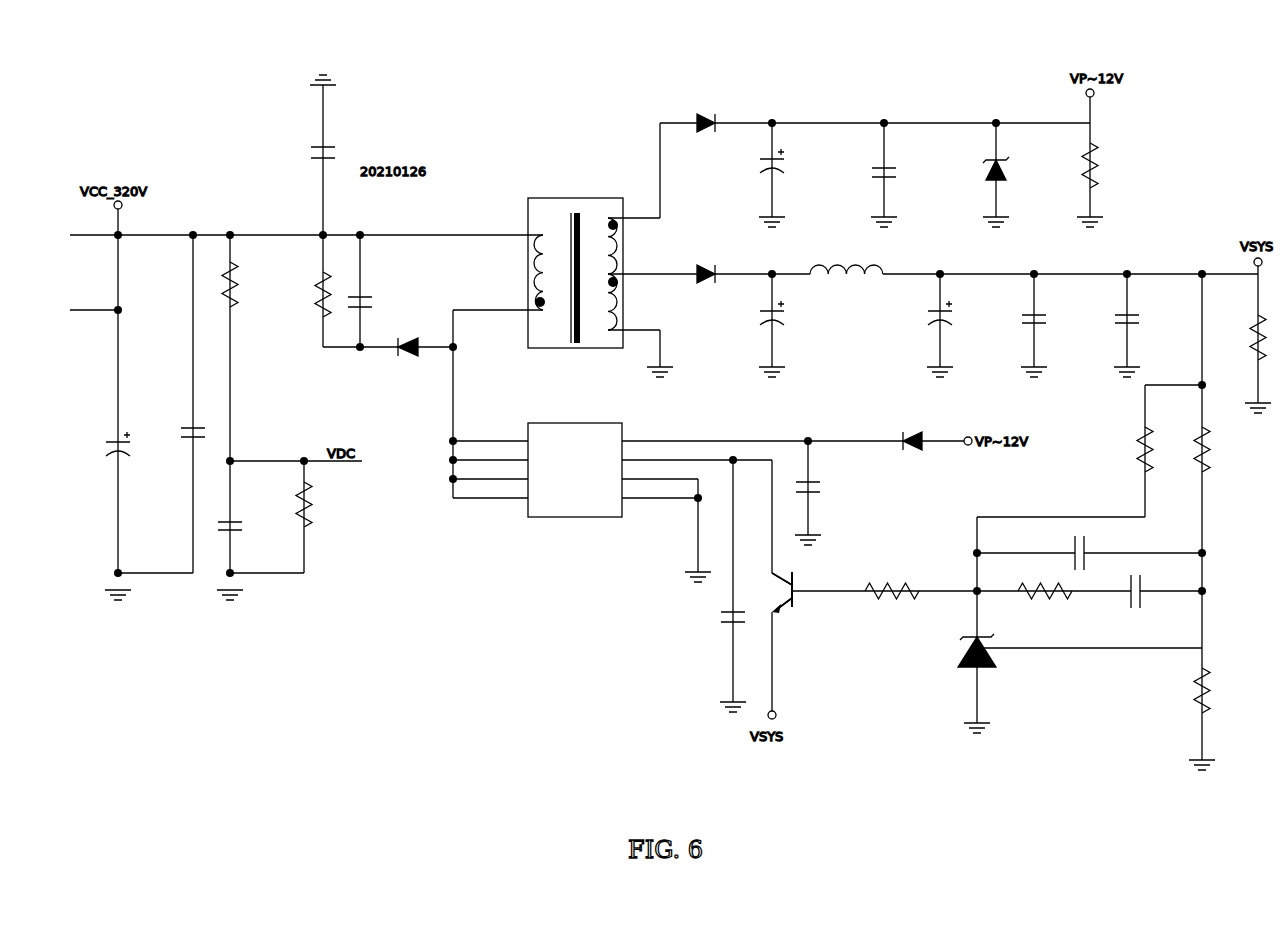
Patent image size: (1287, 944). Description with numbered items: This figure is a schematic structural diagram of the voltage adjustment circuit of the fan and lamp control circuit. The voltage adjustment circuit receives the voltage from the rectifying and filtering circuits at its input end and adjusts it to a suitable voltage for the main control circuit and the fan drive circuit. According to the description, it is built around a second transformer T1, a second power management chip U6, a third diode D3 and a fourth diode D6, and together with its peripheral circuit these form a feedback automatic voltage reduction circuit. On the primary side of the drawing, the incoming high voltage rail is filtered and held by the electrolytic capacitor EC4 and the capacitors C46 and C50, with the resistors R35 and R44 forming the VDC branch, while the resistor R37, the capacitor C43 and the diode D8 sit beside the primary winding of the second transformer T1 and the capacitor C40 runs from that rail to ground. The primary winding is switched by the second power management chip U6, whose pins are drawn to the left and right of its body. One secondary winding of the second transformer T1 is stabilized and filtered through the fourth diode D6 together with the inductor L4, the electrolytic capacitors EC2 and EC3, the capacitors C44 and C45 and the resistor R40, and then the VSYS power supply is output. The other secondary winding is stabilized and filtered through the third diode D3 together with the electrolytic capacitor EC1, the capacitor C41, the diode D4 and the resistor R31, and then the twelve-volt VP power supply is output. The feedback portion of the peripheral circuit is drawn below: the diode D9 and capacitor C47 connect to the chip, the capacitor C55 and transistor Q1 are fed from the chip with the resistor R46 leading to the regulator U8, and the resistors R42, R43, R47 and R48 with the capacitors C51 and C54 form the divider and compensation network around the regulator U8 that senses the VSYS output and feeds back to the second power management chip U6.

The capacitor C40 is at (291, 154).
The resistor R37 is at (296, 294).
The resistor R35 is at (240, 315).
The capacitor C43 is at (386, 283).
The diode D8 is at (397, 346).
The electrolytic capacitor EC4 is at (115, 472).
The capacitor C46 is at (190, 470).
The capacitor C50 is at (238, 517).
The resistor R44 is at (321, 504).
The second transformer T1 is at (576, 248).
The third diode D3 is at (699, 124).
The electrolytic capacitor EC1 is at (789, 165).
The capacitor C41 is at (900, 161).
The zener diode D4 is at (1008, 162).
The resistor R31 is at (1108, 165).
The fourth diode D6 is at (699, 274).
The inductor L4 is at (836, 265).
The electrolytic capacitor EC2 is at (789, 316).
The electrolytic capacitor EC3 is at (957, 316).
The capacitor C44 is at (1050, 323).
The capacitor C45 is at (1143, 323).
The resistor R40 is at (1243, 337).
The resistor R42 is at (1117, 449).
The resistor R43 is at (1186, 449).
The second power management chip U6 is at (574, 480).
The diode D9 is at (885, 437).
The capacitor C47 is at (823, 491).
The capacitor C55 is at (714, 621).
The transistor Q1 is at (792, 591).
The resistor R46 is at (883, 597).
The shunt regulator U8 is at (958, 658).
The resistor R47 is at (1026, 587).
The capacitor C51 is at (1058, 554).
The capacitor C54 is at (1115, 593).
The resistor R48 is at (1167, 690).